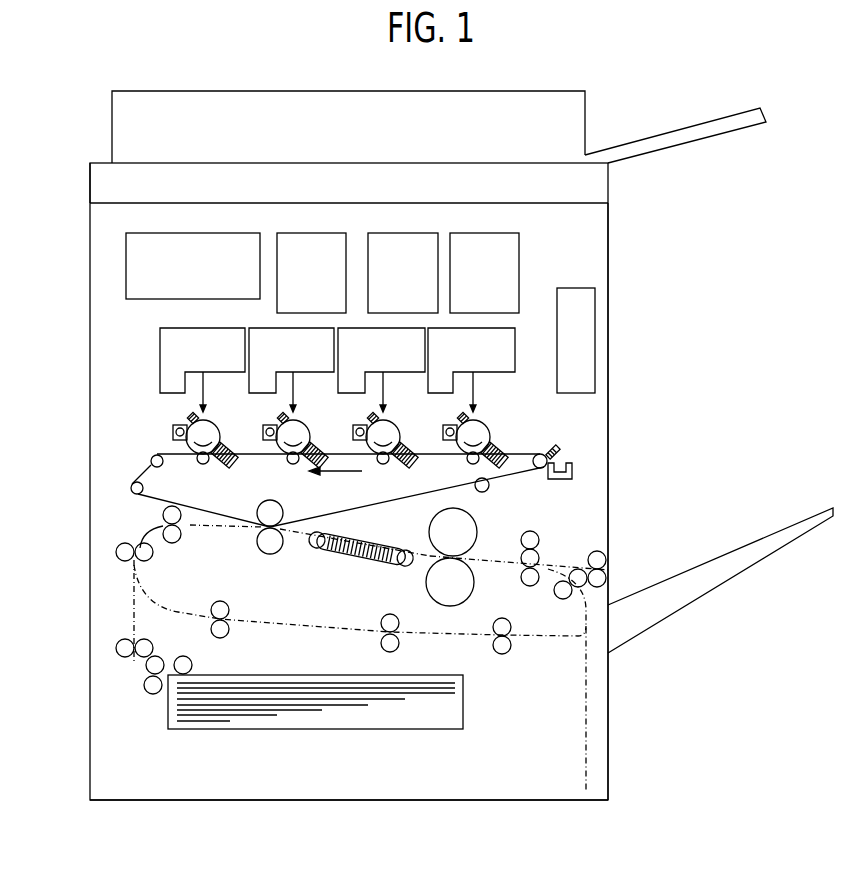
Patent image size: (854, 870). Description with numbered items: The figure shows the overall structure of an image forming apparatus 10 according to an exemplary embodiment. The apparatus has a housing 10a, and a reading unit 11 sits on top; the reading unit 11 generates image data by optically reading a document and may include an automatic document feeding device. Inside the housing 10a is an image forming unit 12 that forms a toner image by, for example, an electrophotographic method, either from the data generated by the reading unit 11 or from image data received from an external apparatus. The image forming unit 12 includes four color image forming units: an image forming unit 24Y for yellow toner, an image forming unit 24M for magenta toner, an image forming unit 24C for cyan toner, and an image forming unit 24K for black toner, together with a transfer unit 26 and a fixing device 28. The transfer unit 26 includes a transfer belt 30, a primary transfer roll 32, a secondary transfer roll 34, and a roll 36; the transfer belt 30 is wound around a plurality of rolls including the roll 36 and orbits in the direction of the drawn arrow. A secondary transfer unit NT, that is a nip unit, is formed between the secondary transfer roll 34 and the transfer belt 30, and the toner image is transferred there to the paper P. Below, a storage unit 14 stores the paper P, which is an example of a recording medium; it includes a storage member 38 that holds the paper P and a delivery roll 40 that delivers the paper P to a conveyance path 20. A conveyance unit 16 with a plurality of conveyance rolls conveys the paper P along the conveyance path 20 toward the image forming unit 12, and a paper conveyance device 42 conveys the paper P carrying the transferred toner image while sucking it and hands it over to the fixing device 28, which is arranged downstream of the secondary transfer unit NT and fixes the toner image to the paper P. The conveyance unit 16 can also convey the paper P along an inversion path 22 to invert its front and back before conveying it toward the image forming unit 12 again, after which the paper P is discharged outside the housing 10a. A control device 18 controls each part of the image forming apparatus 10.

The image forming apparatus 10 is at (680, 100).
The housing 10a is at (608, 248).
The reading unit 11 is at (90, 183).
The image forming unit 12 is at (542, 433).
The storage unit 14 is at (492, 725).
The conveyance unit 16 is at (112, 523).
The control device 18 is at (596, 332).
The conveyance path 20 is at (122, 612).
The inversion path 22 is at (610, 650).
The image forming unit 24K is at (213, 421).
The image forming unit 24C is at (303, 421).
The image forming unit 24M is at (393, 421).
The image forming unit 24Y is at (483, 421).
The transfer unit 26 is at (550, 494).
The fixing device 28 is at (484, 521).
The transfer belt 30 is at (487, 539).
The primary transfer roll 32 is at (200, 464).
The secondary transfer roll 34 is at (262, 550).
The roll 36 is at (258, 502).
The storage member 38 is at (167, 720).
The delivery roll 40 is at (192, 663).
The paper conveyance device 42 is at (361, 564).
The secondary transfer unit NT is at (317, 513).
The paper P is at (318, 675).